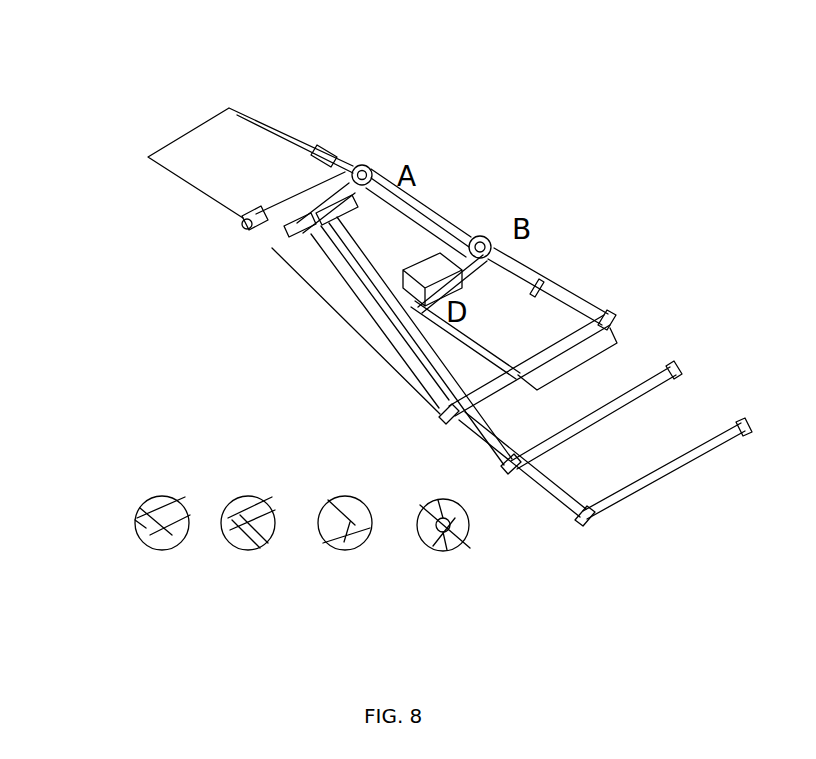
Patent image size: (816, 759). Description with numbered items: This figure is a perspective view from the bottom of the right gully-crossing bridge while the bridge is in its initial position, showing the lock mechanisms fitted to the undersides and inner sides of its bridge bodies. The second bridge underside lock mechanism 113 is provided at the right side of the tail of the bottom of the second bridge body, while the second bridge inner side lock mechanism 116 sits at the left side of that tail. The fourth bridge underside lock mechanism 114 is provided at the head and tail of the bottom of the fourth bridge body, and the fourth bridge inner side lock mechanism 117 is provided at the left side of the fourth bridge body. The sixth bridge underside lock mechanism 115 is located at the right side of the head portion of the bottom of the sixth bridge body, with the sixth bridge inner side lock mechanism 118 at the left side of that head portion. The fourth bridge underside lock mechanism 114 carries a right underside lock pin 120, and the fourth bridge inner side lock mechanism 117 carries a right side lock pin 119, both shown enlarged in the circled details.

The second bridge underside lock mechanism 113 is at (243, 220).
The fourth bridge underside lock mechanism 114 is at (318, 236).
The sixth bridge underside lock mechanism 115 is at (418, 316).
The second bridge inner side lock mechanism 116 is at (337, 162).
The fourth bridge inner side lock mechanism 117 is at (467, 232).
The sixth bridge inner side lock mechanism 118 is at (540, 272).
The right side lock pin 119 is at (368, 535).
The right underside lock pin 120 is at (187, 540).